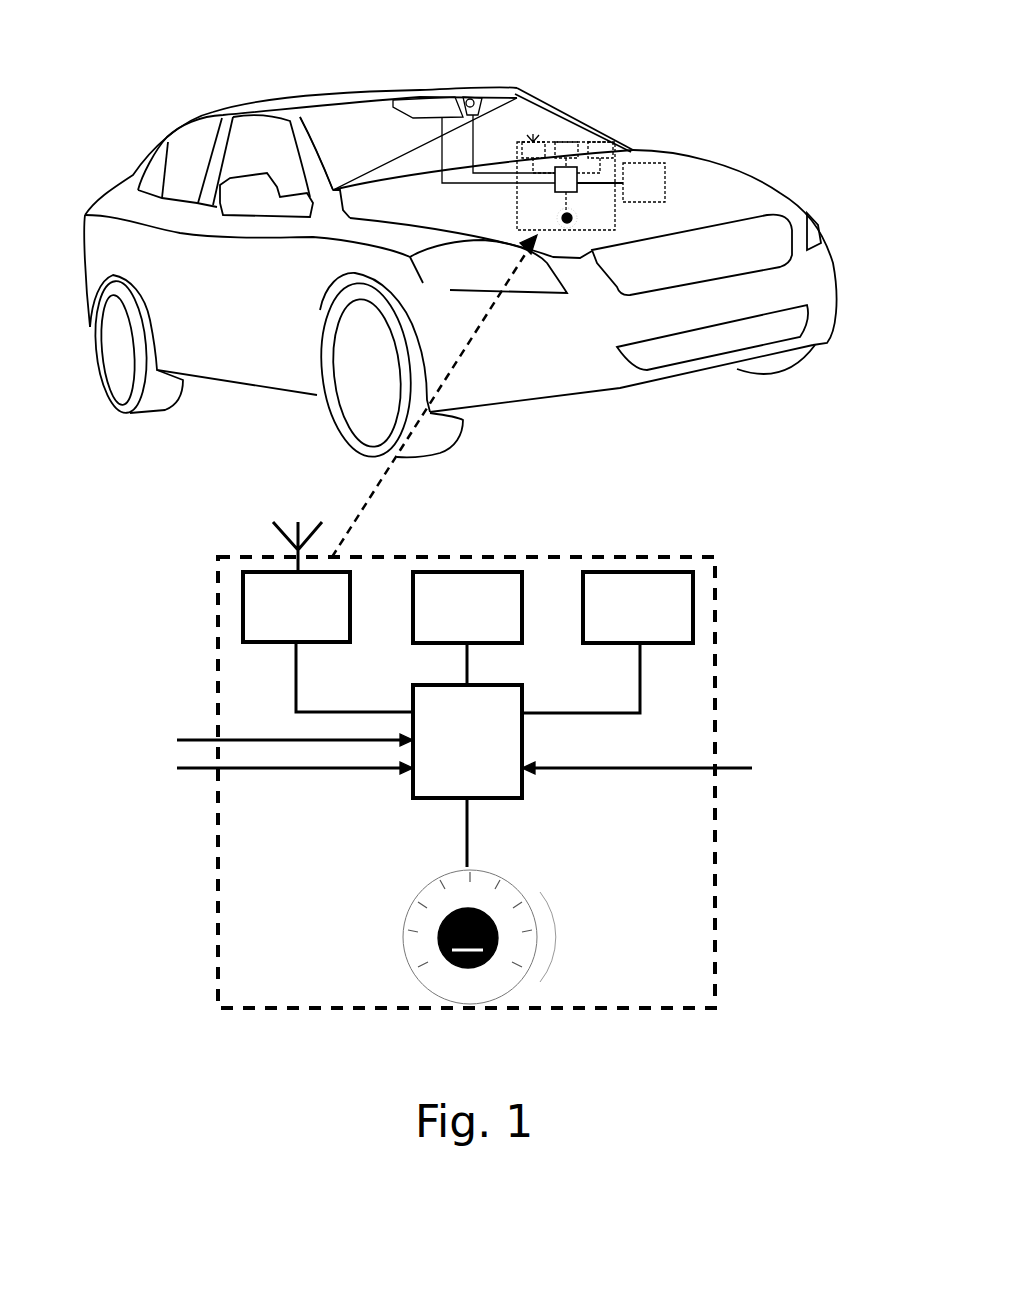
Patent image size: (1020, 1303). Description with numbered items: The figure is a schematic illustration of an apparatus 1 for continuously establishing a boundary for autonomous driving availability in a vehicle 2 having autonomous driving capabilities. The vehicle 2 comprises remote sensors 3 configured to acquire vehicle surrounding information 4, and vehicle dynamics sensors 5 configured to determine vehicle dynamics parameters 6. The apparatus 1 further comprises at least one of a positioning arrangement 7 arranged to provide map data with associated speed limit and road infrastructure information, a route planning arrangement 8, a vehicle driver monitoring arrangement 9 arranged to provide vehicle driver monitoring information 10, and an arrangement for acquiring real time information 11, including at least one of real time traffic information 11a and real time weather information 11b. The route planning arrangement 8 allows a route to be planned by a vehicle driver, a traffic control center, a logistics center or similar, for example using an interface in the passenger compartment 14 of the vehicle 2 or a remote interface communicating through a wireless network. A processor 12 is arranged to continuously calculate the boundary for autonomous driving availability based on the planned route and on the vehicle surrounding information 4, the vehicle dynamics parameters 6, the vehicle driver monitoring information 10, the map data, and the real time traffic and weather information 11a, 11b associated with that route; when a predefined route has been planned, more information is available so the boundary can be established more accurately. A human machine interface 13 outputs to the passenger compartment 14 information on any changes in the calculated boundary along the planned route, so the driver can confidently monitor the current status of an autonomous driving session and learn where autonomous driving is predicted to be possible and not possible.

The apparatus 1 is at (405, 556).
The vehicle 2 is at (236, 105).
The remote sensors 3 is at (437, 105).
The vehicle surrounding information 4 is at (280, 769).
The vehicle dynamics sensors 5 is at (643, 180).
The vehicle dynamics parameters 6 is at (653, 774).
The positioning arrangement 7 is at (467, 628).
The route planning arrangement 8 is at (607, 642).
The vehicle driver monitoring arrangement 9 is at (472, 96).
The vehicle driver monitoring information 10 is at (275, 741).
The arrangement for acquiring real time information 11 is at (328, 642).
The real time traffic information 11a is at (206, 506).
The real time weather information 11b is at (253, 512).
The processor 12 is at (467, 776).
The human machine interface 13 is at (429, 884).
The passenger compartment 14 is at (365, 158).